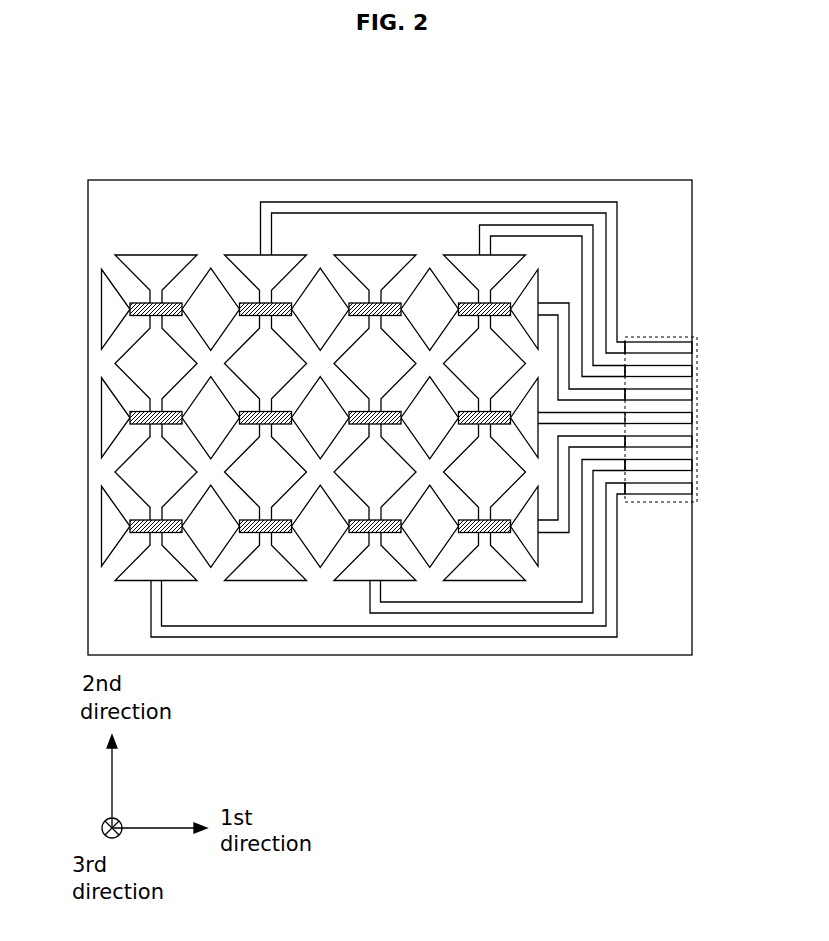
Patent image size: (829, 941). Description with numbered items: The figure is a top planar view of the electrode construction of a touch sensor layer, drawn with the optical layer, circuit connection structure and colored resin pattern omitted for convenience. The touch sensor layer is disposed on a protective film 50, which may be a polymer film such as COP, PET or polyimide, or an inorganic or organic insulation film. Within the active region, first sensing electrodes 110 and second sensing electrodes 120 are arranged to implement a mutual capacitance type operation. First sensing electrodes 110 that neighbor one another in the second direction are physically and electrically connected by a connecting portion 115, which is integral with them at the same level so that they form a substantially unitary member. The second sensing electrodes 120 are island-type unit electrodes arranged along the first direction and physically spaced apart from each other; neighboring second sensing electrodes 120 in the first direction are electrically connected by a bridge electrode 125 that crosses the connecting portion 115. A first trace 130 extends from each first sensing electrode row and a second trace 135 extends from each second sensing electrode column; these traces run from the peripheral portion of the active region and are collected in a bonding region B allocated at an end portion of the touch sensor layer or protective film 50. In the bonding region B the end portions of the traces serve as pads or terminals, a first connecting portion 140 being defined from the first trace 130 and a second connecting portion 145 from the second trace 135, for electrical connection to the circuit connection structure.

The protective film 50 is at (193, 192).
The first sensing electrode 110 is at (278, 484).
The connecting portion 115 is at (148, 430).
The second sensing electrode 120 is at (108, 413).
The bridge electrode 125 is at (268, 535).
The first trace 130 is at (617, 276).
The second trace 135 is at (613, 500).
The first connecting portion 140 is at (692, 343).
The second connecting portion 145 is at (690, 394).
The bonding region B is at (700, 443).